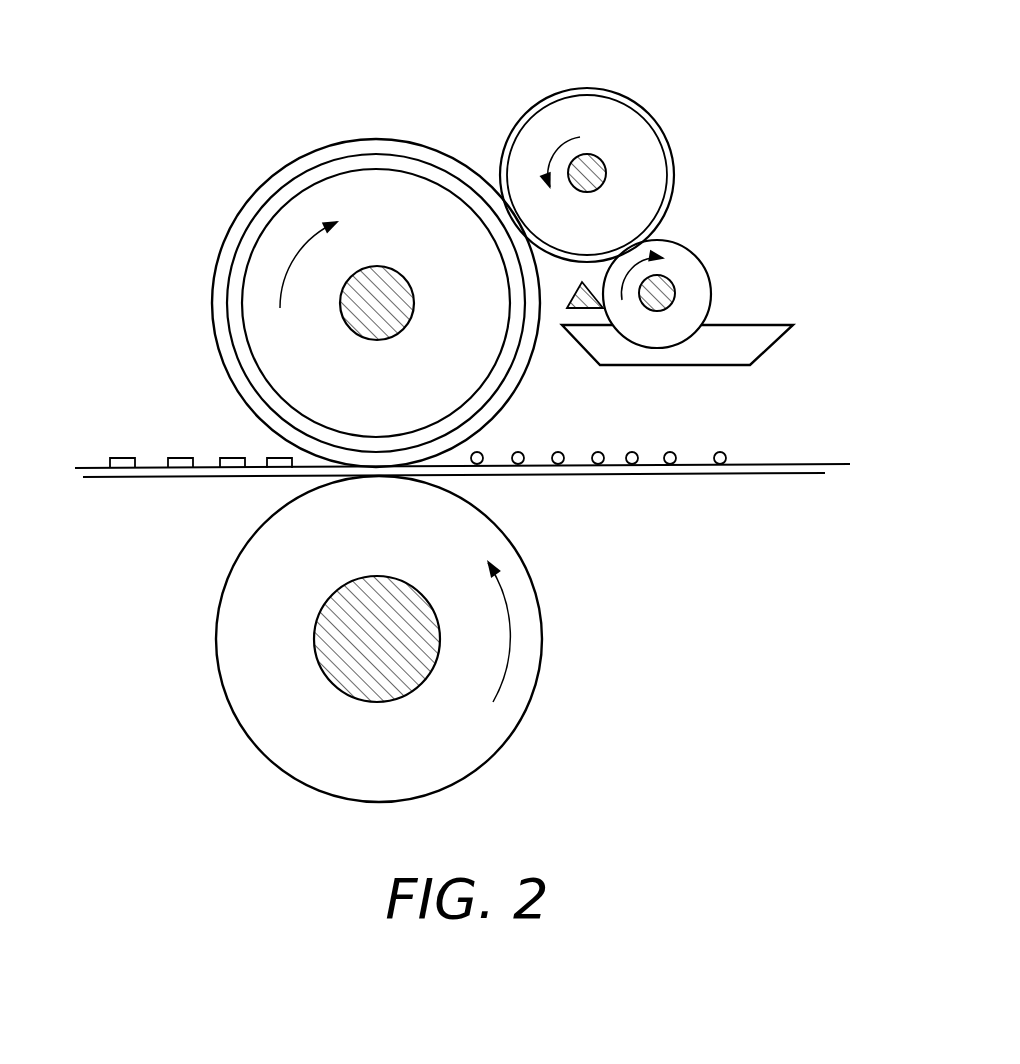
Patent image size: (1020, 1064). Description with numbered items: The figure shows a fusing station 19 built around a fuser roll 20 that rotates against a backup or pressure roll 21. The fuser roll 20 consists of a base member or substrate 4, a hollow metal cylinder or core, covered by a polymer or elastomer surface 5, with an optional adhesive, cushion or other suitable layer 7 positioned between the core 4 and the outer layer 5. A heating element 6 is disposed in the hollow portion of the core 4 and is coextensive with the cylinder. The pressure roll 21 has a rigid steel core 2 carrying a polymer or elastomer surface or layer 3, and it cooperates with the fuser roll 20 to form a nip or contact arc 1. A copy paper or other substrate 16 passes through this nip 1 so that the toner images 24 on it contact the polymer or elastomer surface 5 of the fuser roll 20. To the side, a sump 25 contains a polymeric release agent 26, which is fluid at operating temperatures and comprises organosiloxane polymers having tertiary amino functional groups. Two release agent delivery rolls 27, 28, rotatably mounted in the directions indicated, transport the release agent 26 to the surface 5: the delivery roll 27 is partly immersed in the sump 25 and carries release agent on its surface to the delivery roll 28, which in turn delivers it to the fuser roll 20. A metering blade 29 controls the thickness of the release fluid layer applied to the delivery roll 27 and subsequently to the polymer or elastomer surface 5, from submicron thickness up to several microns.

The nip or contact arc 1 is at (383, 476).
The rigid steel core 2 is at (320, 668).
The polymer or elastomer surface or layer 3 is at (462, 748).
The base member or substrate 4 is at (412, 177).
The polymer or elastomer surface 5 is at (278, 172).
The heating element 6 is at (382, 265).
The adhesive, cushion, or other suitable layer 7 is at (442, 173).
The copy paper or other substrate 16 is at (692, 477).
The fusing station 19 is at (183, 70).
The fuser roll 20 is at (170, 297).
The backup or pressure roll 21 is at (145, 595).
The toner images 24 is at (721, 451).
The sump 25 is at (770, 346).
The polymeric release agent 26 is at (743, 325).
The release agent delivery roll 27 is at (703, 262).
The release agent delivery roll 28 is at (673, 157).
The metering blade 29 is at (566, 298).